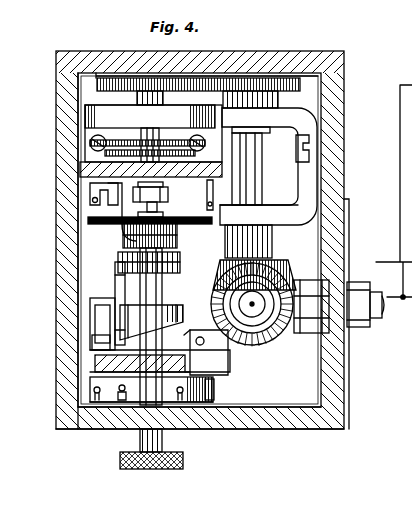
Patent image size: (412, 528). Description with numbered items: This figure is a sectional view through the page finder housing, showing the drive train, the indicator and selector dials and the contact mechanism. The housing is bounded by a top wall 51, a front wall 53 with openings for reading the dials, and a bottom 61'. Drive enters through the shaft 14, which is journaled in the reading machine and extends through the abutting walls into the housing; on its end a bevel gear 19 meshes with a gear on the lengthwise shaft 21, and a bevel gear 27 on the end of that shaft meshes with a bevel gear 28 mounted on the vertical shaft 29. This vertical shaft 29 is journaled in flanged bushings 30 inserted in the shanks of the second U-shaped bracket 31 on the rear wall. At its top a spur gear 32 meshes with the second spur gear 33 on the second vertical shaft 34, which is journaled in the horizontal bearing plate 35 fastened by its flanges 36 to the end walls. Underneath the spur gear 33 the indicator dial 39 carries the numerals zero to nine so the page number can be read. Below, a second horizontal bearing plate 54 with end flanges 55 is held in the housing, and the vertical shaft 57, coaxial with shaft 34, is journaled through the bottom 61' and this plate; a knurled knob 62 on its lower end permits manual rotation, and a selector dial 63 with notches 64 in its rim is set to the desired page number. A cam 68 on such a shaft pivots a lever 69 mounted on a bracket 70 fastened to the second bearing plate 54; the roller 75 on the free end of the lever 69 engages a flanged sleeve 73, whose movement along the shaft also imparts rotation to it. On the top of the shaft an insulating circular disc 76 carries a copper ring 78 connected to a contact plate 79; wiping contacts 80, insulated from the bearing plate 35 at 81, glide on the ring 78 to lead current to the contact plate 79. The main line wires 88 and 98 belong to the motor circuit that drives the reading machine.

The top wall 51 is at (60, 53).
The front wall 53 is at (62, 268).
The bottom 61' is at (200, 431).
The spur gear 32 is at (280, 78).
The second spur gear 33 is at (112, 78).
The second vertical shaft 34 is at (80, 97).
The indicator dial 39 is at (85, 114).
The flanges 36 is at (82, 142).
The horizontal bearing plate 35 is at (84, 165).
The flanged bushings 30 is at (276, 108).
The vertical shaft 29 is at (262, 180).
The second U-shaped bracket 31 is at (315, 153).
The insulation 81 is at (88, 184).
The contact plate 79 is at (158, 214).
The wiping contacts 80 is at (112, 210).
The roller 75 is at (114, 250).
The copper ring 78 is at (162, 236).
The bevel gear 28 is at (224, 262).
The sleeve 73 is at (176, 264).
The bracket 70 is at (116, 270).
The lever 69 is at (101, 314).
The cam 68 is at (153, 326).
The end flanges 55 is at (206, 340).
The shaft 21 is at (168, 362).
The bevel gear 27 is at (241, 304).
The bevel gear 19 is at (251, 307).
The shaft 14 is at (371, 330).
The main line wire 88 is at (400, 262).
The main line wire 98 is at (386, 305).
The second horizontal bearing plate 54 is at (98, 365).
The notches 64 is at (135, 398).
The selector dial 63 is at (215, 386).
The vertical shaft 57 is at (142, 432).
The knurled knob 62 is at (185, 460).
The circular disc 76 is at (212, 220).